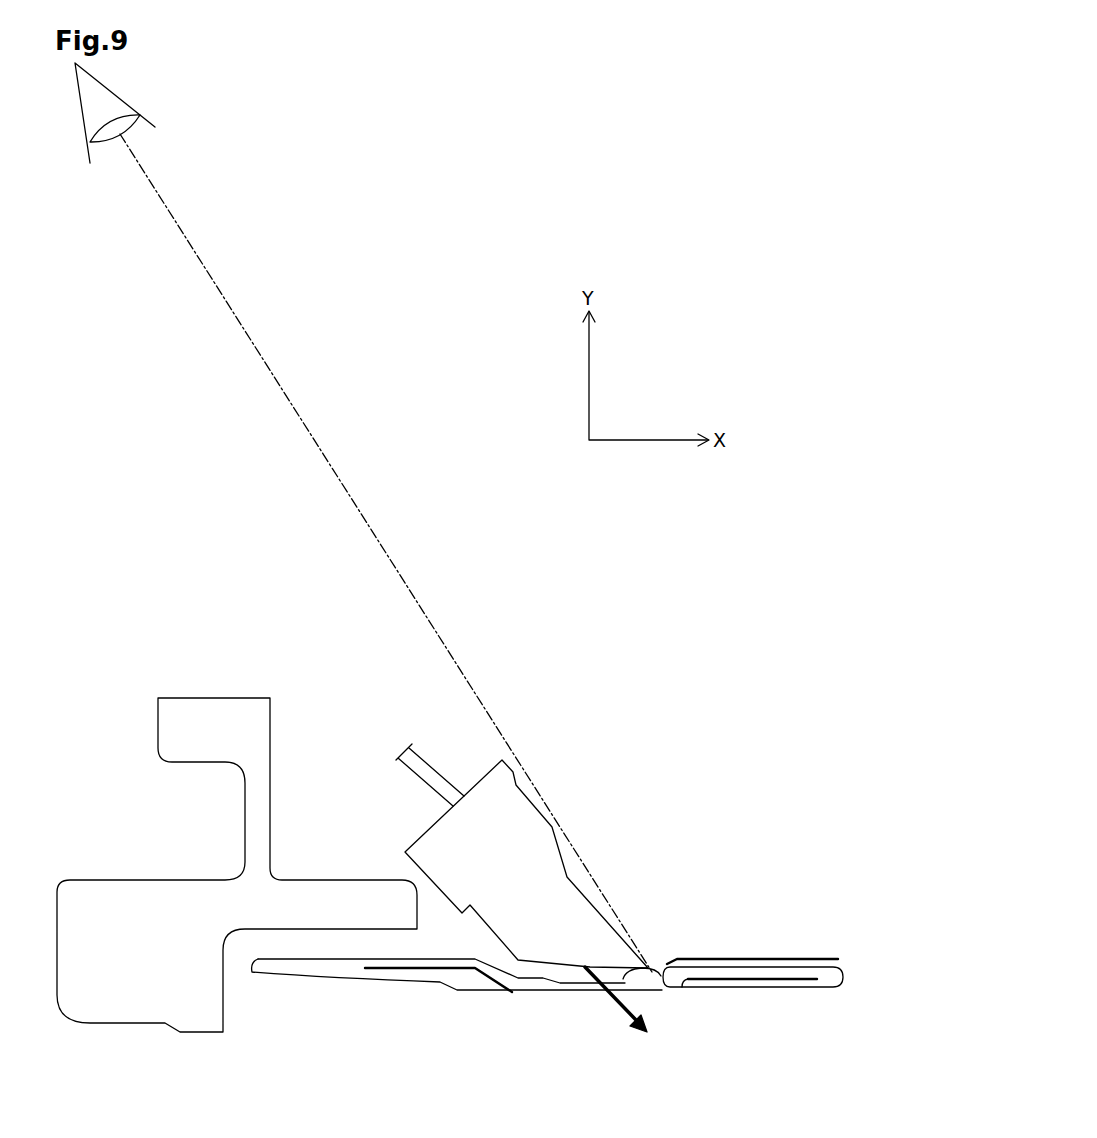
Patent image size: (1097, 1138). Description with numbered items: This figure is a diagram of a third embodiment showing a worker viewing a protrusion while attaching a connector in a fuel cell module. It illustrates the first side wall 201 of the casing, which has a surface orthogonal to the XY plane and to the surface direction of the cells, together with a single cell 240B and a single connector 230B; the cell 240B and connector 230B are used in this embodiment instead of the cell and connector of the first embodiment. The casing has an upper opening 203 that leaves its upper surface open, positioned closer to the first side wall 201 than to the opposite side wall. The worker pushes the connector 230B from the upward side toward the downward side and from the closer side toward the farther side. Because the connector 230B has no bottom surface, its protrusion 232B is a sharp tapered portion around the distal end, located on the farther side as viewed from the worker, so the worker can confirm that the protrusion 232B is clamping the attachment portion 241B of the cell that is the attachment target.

The first side wall 201 is at (104, 933).
The upper opening 203 is at (644, 774).
The connector 230B is at (432, 842).
The protrusion 232B is at (637, 970).
The cell 240B is at (778, 927).
The attachment portion 241B is at (653, 988).